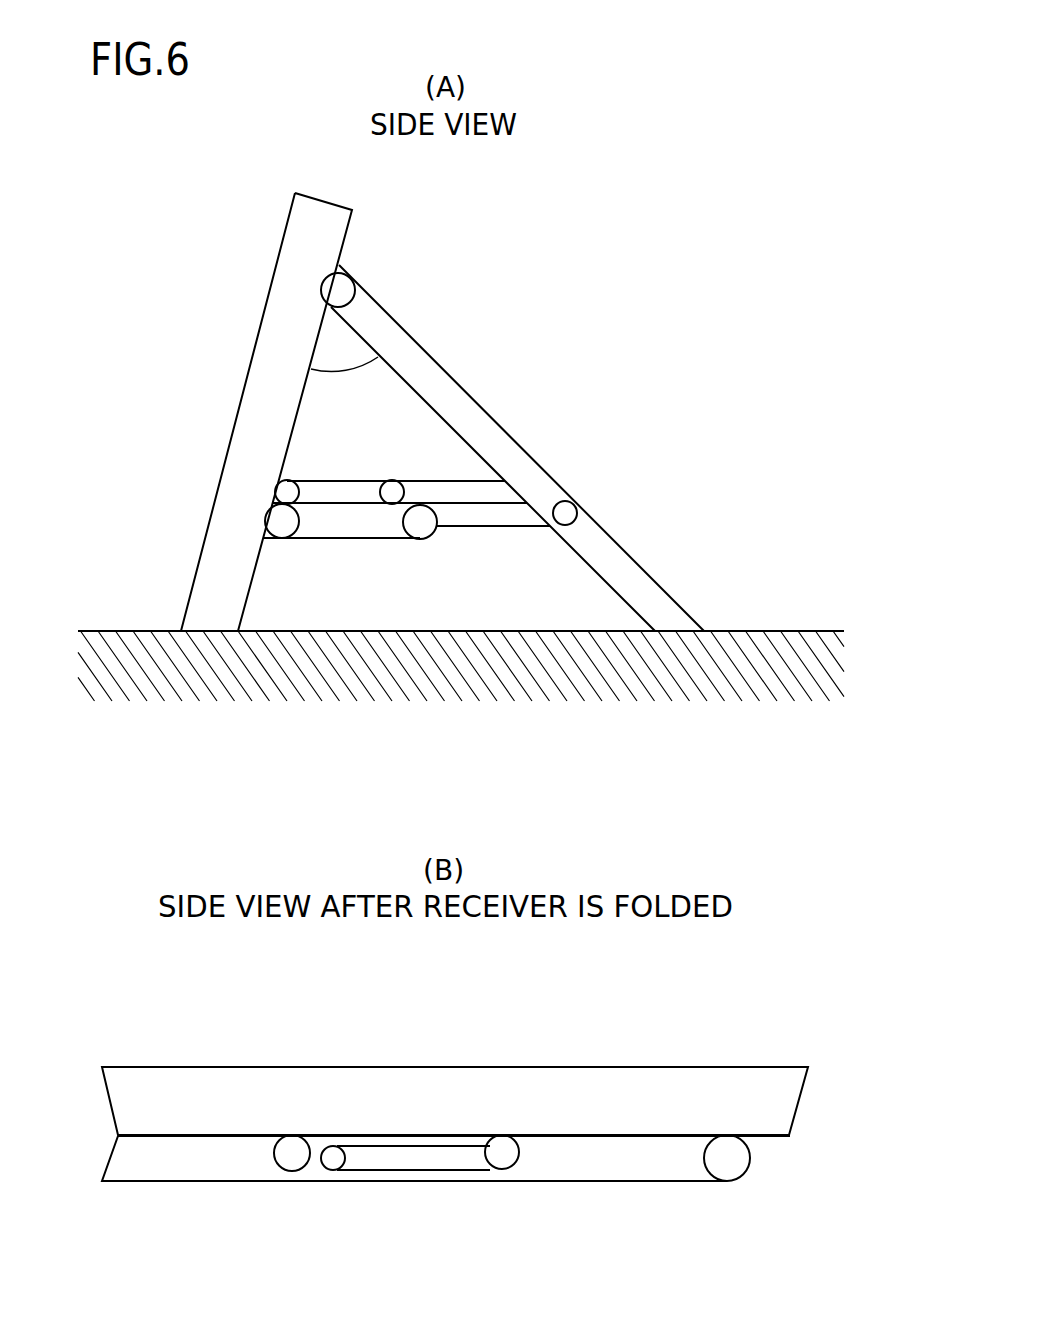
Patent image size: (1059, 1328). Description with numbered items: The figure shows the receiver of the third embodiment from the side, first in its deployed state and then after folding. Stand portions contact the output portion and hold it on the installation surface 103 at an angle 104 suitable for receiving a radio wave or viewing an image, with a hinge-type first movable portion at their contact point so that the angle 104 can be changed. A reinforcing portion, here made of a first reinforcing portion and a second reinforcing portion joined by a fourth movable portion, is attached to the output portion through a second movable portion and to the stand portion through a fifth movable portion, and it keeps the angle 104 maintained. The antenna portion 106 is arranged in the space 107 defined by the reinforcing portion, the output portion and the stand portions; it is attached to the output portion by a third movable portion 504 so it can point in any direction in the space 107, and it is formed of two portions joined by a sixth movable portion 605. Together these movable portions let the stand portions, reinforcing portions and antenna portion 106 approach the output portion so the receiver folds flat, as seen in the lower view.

The installation surface 103 is at (815, 631).
The angle 104 is at (357, 337).
The antenna portion 106 is at (473, 481).
The space 107 is at (427, 447).
The third movable portion 504 is at (287, 480).
The sixth movable portion 605 is at (390, 480).